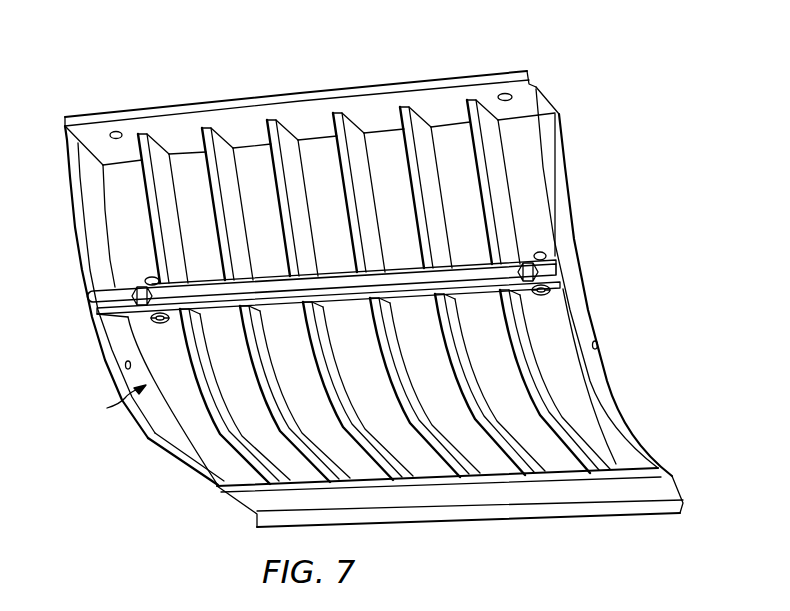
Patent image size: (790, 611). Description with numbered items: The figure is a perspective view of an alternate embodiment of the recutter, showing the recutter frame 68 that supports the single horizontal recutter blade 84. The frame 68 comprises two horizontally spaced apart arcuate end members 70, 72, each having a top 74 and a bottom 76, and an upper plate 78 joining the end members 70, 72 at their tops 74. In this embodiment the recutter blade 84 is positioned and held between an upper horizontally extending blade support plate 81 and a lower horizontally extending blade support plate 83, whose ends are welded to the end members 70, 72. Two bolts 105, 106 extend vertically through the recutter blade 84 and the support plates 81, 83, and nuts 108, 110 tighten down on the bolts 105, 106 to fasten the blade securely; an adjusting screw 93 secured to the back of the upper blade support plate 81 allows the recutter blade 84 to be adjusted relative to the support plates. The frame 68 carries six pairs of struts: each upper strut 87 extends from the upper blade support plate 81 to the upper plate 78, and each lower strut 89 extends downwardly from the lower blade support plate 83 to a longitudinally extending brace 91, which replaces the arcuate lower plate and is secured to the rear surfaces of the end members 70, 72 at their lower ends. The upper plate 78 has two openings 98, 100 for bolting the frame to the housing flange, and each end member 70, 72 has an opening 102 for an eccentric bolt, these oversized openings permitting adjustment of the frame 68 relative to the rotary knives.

The frame 68 is at (112, 405).
The end member 70 is at (570, 235).
The end member 72 is at (113, 323).
The top 74 is at (557, 155).
The bottom 76 is at (182, 440).
The upper plate 78 is at (301, 97).
The upper blade support plate 81 is at (348, 268).
The lower blade support plate 83 is at (346, 298).
The recutter blade 84 is at (402, 278).
The upper strut 87 is at (213, 193).
The lower strut 89 is at (273, 400).
The brace 91 is at (573, 513).
The adjusting screw 93 is at (135, 290).
The opening 98 is at (115, 131).
The opening 100 is at (503, 93).
The opening 102 is at (126, 365).
The bolt 105 is at (157, 320).
The bolt 106 is at (550, 296).
The nut 108 is at (157, 280).
The nut 110 is at (538, 254).